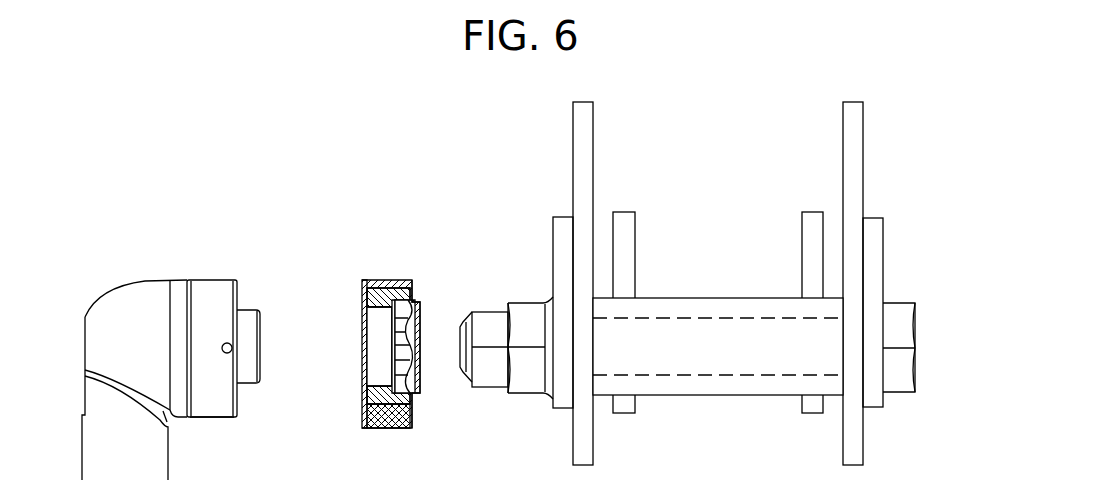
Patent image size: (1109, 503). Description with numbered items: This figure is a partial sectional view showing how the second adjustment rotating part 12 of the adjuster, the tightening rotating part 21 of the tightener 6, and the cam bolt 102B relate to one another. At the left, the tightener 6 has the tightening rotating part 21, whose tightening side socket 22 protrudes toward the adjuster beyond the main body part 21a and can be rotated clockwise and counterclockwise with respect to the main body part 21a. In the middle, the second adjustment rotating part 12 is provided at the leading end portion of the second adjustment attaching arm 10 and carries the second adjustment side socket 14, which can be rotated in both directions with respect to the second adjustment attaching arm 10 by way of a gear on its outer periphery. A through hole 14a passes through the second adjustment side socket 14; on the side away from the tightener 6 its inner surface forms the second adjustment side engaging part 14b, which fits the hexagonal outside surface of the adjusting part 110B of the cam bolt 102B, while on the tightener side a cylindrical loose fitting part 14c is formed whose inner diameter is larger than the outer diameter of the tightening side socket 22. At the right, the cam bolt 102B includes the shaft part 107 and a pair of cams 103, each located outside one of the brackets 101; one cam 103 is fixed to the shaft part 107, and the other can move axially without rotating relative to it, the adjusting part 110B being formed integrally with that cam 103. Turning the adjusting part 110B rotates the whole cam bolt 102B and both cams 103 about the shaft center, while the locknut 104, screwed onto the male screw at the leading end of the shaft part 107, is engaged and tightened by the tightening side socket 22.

The tightener 6 is at (133, 279).
The tightening rotating part 21 is at (204, 265).
The main body part 21a is at (215, 405).
The tightening side socket 22 is at (245, 373).
The second adjustment attaching arm 10 is at (395, 430).
The second adjustment rotating part 12 is at (420, 284).
The second adjustment side socket 14 is at (390, 307).
The through hole 14a is at (368, 356).
The second adjustment side engaging part 14b is at (400, 363).
The loose fitting part 14c is at (375, 337).
The bracket 101 is at (587, 132).
The cam 103 is at (568, 233).
The cam bolt 102B is at (889, 293).
The locknut 104 is at (482, 323).
The shaft part 107 is at (717, 347).
The adjusting part 110B is at (527, 374).